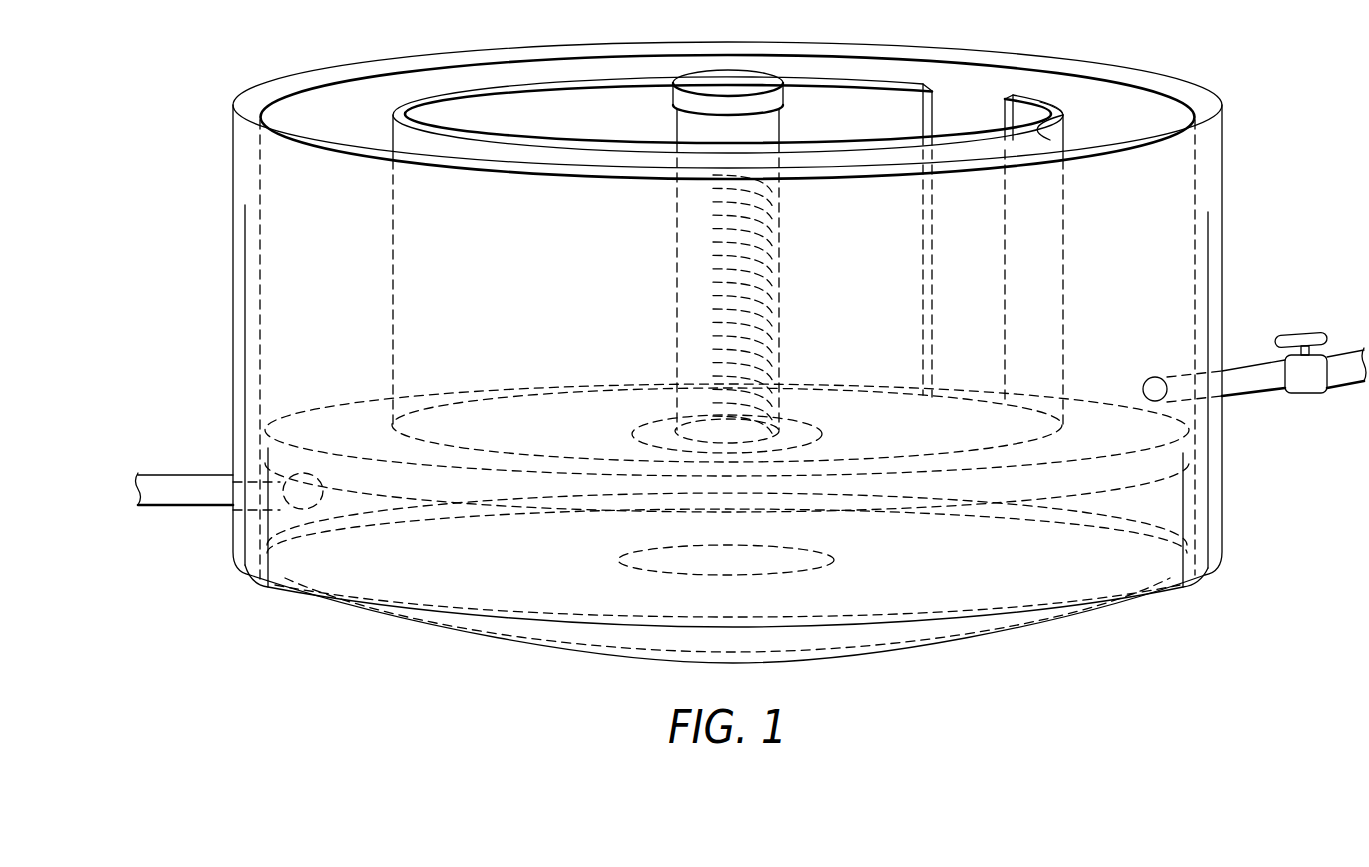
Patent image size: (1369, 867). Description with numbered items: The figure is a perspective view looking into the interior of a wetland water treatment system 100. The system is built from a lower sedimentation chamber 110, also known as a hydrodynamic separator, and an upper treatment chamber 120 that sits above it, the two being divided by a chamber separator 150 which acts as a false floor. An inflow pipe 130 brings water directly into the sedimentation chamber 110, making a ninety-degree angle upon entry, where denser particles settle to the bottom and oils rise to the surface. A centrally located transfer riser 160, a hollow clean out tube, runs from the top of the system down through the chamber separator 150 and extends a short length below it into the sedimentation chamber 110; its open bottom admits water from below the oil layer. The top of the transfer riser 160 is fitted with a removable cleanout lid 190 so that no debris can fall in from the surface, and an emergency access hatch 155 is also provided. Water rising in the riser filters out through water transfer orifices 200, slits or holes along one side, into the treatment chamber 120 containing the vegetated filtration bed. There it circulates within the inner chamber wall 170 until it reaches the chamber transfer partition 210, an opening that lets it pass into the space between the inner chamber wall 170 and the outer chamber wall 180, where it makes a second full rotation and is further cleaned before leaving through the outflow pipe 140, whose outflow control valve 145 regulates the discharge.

The wetland water treatment system 100 is at (105, 100).
The sedimentation chamber 110 is at (1228, 465).
The treatment chamber 120 is at (1230, 113).
The inflow pipe 130 is at (185, 508).
The outflow pipe 140 is at (1283, 393).
The outflow control valve 145 is at (1313, 336).
The chamber separator 150 is at (880, 500).
The emergency access hatch 155 is at (805, 415).
The transfer riser 160 is at (772, 122).
The inner chamber wall 170 is at (1057, 108).
The outer chamber wall 180 is at (1208, 103).
The cleanout lid 190 is at (752, 80).
The water transfer orifices 200 is at (780, 265).
The chamber transfer partition 210 is at (1013, 93).